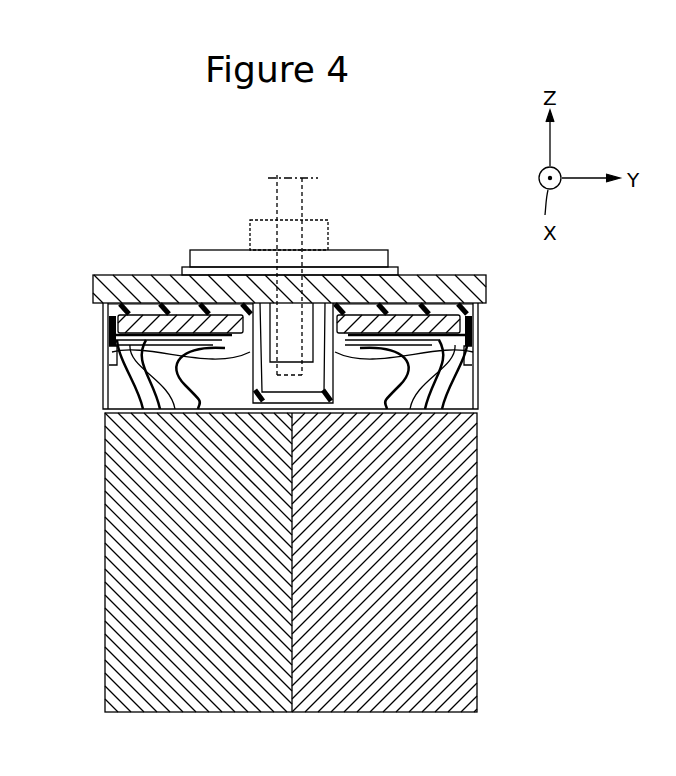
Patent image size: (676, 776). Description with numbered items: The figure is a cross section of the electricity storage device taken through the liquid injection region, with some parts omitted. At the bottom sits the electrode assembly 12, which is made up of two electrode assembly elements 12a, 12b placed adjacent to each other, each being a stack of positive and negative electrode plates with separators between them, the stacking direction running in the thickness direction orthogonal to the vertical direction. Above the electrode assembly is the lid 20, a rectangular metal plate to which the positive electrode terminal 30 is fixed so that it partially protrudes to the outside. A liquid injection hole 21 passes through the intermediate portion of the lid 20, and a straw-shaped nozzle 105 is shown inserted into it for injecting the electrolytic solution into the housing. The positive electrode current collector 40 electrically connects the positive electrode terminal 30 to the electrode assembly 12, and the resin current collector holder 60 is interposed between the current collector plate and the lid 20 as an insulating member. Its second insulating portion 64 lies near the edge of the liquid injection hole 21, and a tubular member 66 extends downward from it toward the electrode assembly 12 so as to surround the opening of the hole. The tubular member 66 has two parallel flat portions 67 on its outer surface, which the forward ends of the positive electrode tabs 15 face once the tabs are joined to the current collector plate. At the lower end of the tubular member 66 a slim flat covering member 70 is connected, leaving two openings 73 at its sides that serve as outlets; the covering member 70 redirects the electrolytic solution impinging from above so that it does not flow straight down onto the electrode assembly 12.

The electrode assembly 12 is at (481, 523).
The electrode assembly element 12a is at (396, 713).
The electrode assembly element 12b is at (192, 713).
The positive electrode tabs 15 is at (125, 384).
The lid 20 is at (459, 273).
The liquid injection hole 21 is at (290, 295).
The positive electrode terminal 30 is at (312, 222).
The positive electrode current collector 40 is at (432, 278).
The current collector holder 60 is at (135, 302).
The second insulating portion 64 is at (170, 306).
The tubular member 66 is at (253, 378).
The flat portions 67 is at (112, 334).
The covering member 70 is at (270, 403).
The openings 73 is at (315, 372).
The nozzle 105 is at (268, 188).